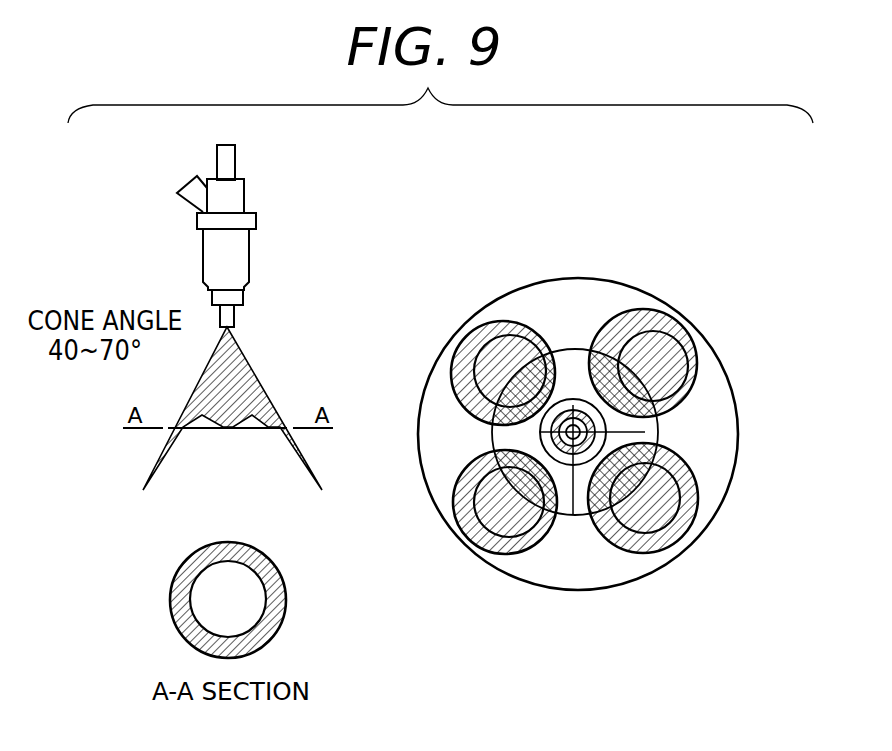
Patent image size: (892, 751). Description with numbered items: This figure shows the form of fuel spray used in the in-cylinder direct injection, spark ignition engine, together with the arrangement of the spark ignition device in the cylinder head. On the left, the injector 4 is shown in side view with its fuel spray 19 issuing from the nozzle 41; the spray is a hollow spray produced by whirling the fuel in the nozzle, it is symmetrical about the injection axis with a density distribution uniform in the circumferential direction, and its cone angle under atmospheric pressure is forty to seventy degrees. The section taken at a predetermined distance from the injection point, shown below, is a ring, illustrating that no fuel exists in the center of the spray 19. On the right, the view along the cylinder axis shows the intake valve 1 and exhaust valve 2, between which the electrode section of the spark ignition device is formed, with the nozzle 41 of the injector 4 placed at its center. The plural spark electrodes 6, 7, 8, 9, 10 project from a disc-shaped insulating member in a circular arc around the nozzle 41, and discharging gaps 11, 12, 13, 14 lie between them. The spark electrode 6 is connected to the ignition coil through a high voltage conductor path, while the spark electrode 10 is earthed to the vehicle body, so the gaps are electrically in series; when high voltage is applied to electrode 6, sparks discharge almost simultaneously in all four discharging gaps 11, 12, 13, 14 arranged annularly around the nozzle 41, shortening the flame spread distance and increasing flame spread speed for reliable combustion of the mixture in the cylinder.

The intake valve 1 is at (665, 350).
The exhaust valve 2 is at (487, 363).
The injector 4 is at (242, 247).
The spark electrode 6 is at (580, 400).
The spark electrode 7 is at (553, 405).
The spark electrode 8 is at (558, 478).
The spark electrode 9 is at (632, 505).
The spark electrode 10 is at (617, 370).
The discharging gap 11 is at (573, 400).
The discharging gap 12 is at (502, 428).
The discharging gap 13 is at (589, 490).
The discharging gap 14 is at (608, 432).
The fuel spray 19 is at (250, 358).
The nozzle 41 is at (606, 420).